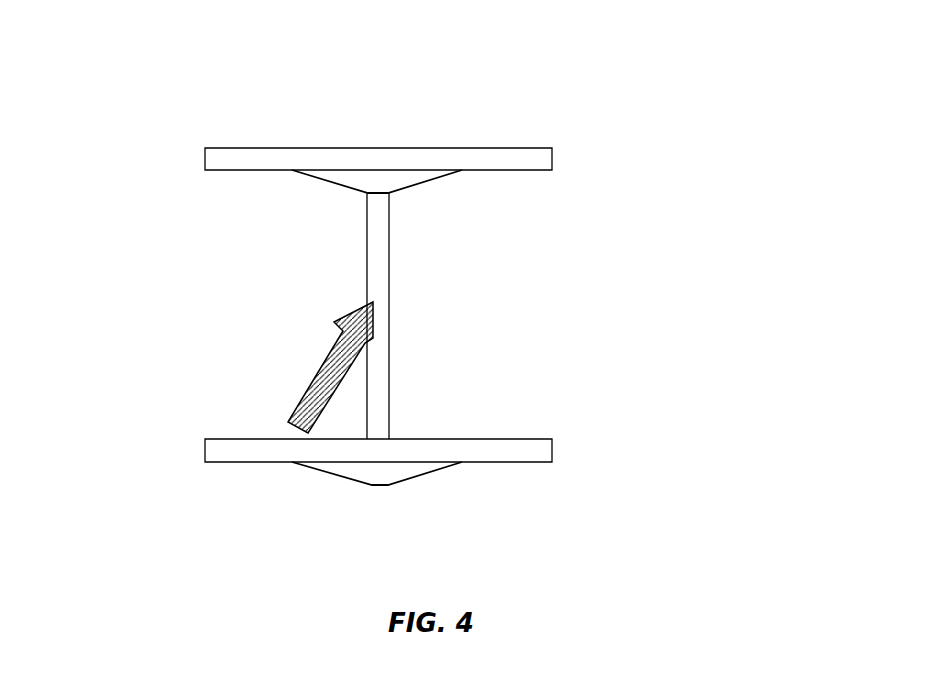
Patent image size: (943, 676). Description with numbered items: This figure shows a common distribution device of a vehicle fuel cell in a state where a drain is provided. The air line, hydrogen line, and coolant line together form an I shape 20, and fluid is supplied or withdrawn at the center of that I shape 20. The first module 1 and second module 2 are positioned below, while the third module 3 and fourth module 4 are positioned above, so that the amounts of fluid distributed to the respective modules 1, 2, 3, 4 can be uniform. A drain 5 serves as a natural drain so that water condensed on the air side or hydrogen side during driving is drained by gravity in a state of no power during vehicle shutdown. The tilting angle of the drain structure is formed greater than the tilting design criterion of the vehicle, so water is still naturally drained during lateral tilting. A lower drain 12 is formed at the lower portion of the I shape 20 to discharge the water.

The first module 1 is at (205, 448).
The second module 2 is at (552, 447).
The third module 3 is at (205, 156).
The fourth module 4 is at (552, 157).
The drain 5 is at (373, 183).
The lower drain 12 is at (450, 467).
The I shape 20 is at (444, 333).